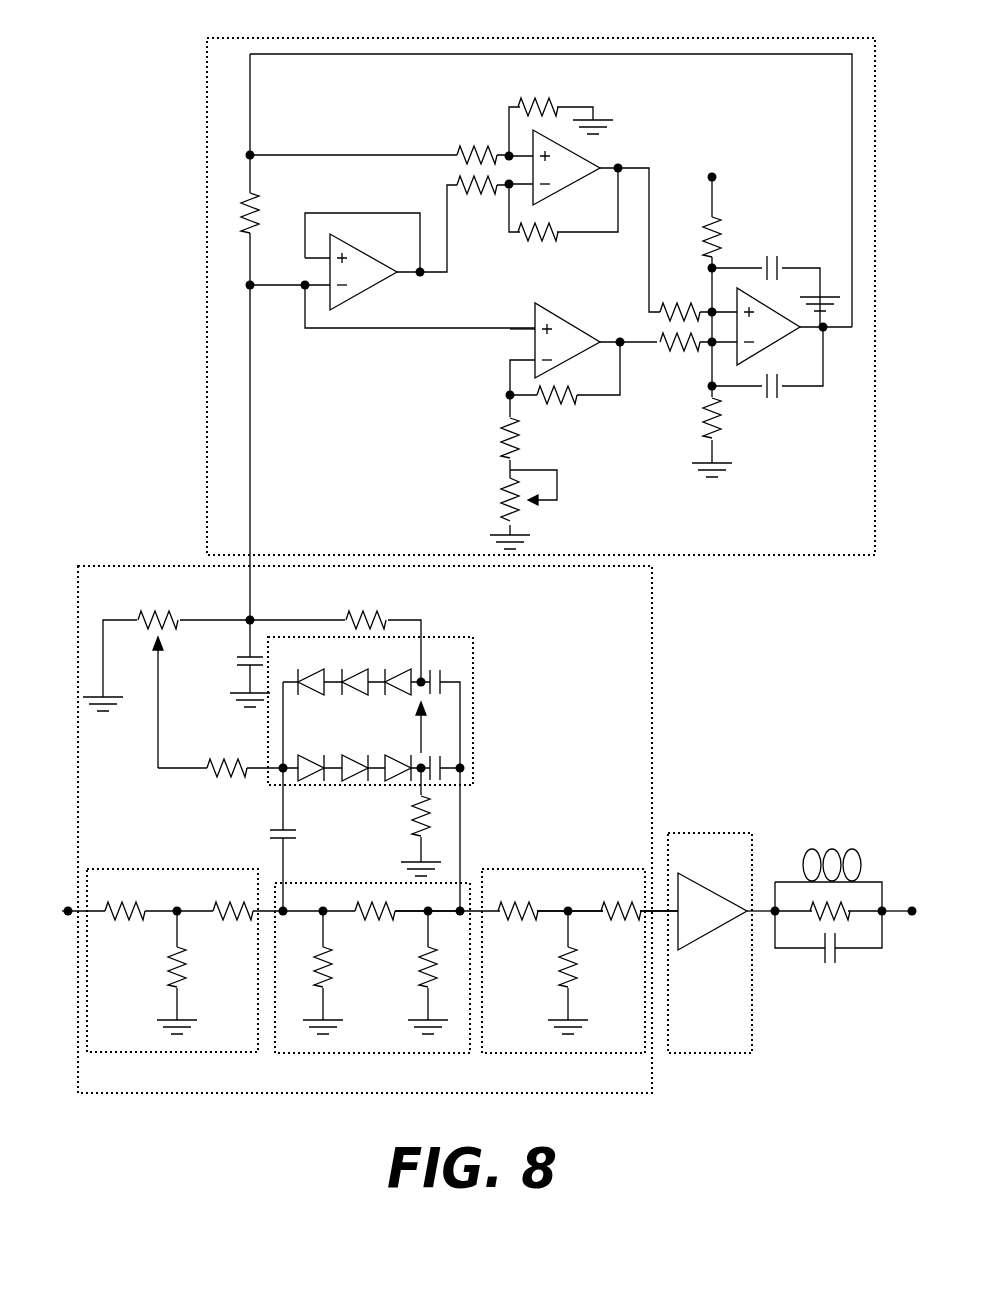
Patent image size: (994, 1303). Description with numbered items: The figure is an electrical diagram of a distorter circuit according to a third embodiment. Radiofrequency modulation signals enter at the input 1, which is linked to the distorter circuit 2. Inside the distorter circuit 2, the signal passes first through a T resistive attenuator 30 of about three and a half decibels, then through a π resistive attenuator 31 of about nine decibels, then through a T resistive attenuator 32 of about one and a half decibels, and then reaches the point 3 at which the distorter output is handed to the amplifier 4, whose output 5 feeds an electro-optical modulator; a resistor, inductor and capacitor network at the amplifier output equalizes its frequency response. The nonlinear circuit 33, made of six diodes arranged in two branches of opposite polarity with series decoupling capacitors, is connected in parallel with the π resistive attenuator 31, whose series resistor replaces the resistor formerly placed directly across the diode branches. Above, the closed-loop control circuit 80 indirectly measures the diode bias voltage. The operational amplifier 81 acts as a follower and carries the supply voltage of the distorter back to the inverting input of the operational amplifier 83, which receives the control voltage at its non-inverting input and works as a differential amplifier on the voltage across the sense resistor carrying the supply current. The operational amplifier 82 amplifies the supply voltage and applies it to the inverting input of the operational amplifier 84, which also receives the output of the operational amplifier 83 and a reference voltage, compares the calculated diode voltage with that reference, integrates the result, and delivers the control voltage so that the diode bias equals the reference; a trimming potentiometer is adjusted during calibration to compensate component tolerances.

The input 1 is at (66, 906).
The distorter circuit 2 is at (653, 694).
The connection node 3 is at (663, 911).
The amplifier 4 is at (722, 834).
The output 5 is at (912, 905).
The T resistive attenuator 30 is at (178, 869).
The π resistive attenuator 31 is at (385, 884).
The T resistive attenuator 32 is at (580, 868).
The nonlinear circuit 33 is at (475, 724).
The closed-loop control circuit 80 is at (206, 356).
The operational amplifier 81 is at (345, 300).
The operational amplifier 82 is at (556, 318).
The operational amplifier 83 is at (587, 150).
The operational amplifier 84 is at (781, 304).